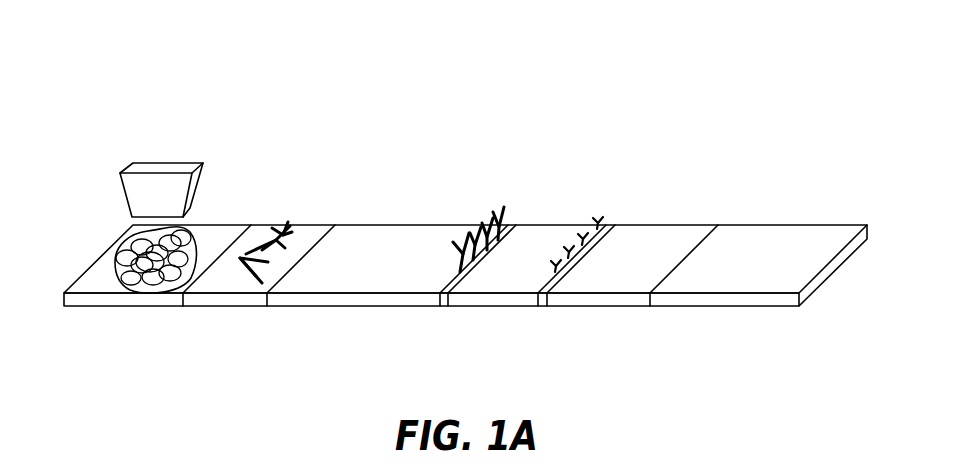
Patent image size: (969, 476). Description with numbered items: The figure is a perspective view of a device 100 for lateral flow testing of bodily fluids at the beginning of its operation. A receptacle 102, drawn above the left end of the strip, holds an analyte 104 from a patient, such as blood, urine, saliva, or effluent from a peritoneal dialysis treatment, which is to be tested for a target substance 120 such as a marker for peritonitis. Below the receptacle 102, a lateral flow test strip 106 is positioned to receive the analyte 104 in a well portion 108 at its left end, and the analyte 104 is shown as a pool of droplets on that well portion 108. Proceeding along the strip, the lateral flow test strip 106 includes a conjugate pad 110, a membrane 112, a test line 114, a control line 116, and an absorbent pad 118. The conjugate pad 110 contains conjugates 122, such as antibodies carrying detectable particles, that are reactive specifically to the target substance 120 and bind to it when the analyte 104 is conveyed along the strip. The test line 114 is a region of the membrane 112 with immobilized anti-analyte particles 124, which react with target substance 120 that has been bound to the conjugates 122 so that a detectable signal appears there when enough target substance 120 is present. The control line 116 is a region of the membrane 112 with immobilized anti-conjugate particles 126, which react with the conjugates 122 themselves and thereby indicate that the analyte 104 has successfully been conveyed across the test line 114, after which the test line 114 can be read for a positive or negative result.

The device 100 is at (186, 78).
The receptacle 102 is at (126, 171).
The analyte 104 is at (114, 251).
The lateral flow test strip 106 is at (388, 174).
The well portion 108 is at (140, 300).
The conjugate pad 110 is at (232, 300).
The membrane 112 is at (350, 300).
The test line 114 is at (443, 298).
The control line 116 is at (542, 298).
The absorbent pad 118 is at (712, 298).
The target substance 120 is at (135, 270).
The conjugates 122 is at (278, 218).
The anti-analyte particles 124 is at (503, 208).
The anti-conjugate particles 126 is at (603, 222).